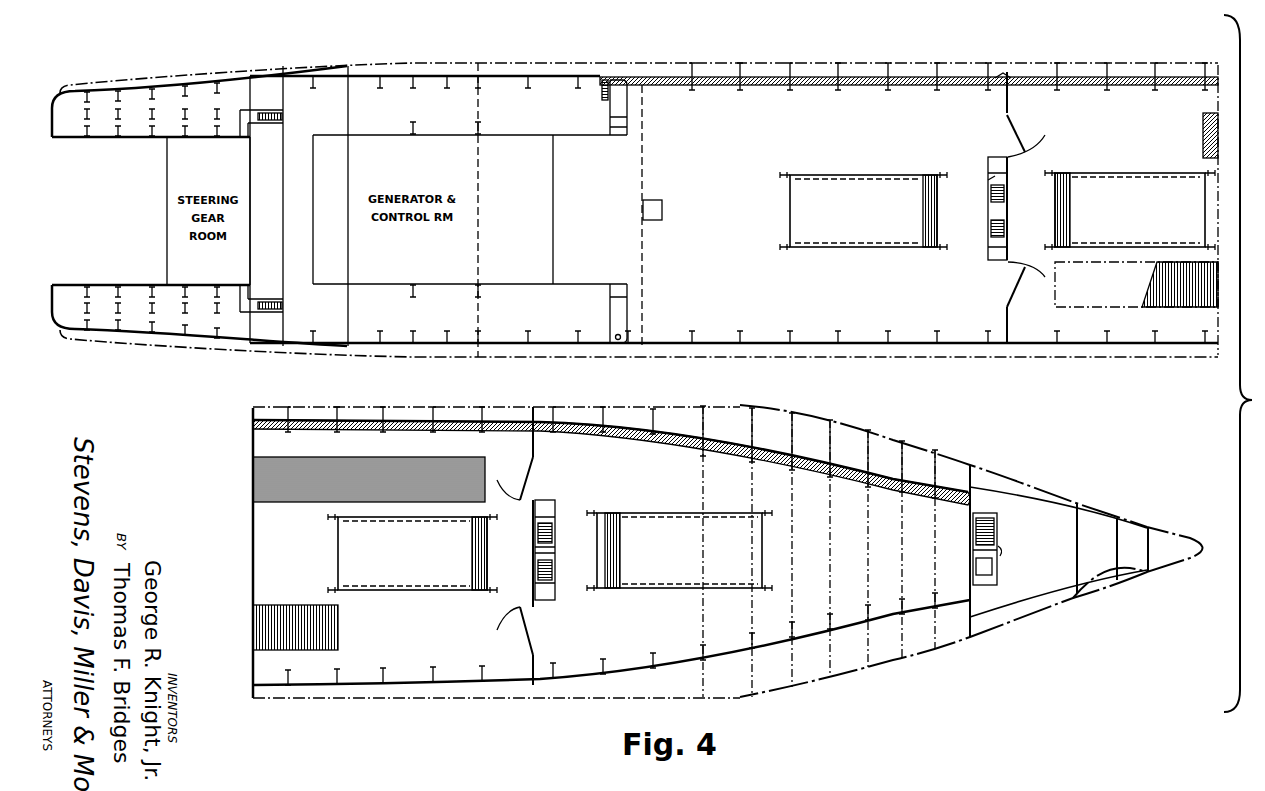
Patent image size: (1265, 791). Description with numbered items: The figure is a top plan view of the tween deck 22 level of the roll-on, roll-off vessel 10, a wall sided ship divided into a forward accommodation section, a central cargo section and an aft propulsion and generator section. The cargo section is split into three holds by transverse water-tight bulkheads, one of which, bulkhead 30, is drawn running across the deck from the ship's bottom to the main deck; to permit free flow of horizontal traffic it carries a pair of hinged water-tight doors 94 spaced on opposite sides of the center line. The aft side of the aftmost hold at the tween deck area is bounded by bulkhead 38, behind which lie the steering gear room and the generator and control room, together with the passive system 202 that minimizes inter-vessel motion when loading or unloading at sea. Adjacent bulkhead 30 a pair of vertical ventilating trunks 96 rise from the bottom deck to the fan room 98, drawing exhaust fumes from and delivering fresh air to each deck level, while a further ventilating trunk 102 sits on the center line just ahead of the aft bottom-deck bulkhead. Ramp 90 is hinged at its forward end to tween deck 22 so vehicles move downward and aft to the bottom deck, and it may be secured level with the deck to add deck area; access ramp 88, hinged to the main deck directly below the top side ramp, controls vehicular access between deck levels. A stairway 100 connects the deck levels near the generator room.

The roll-on, roll-off vessel 10 is at (851, 58).
The passive system 202 is at (305, 97).
The bulkhead 38 is at (553, 196).
The stairway 100 is at (630, 127).
The ventilating trunk 102 is at (662, 203).
The transverse water-tight bulkhead 30 is at (1010, 105).
The hinged water-tight doors 94 is at (1017, 287).
The vertical ventilating trunks 96 is at (1000, 168).
The tween deck 22 is at (860, 294).
The access ramp 88 is at (1178, 307).
The third ramp 90 is at (275, 468).
The fan room 98 is at (557, 508).